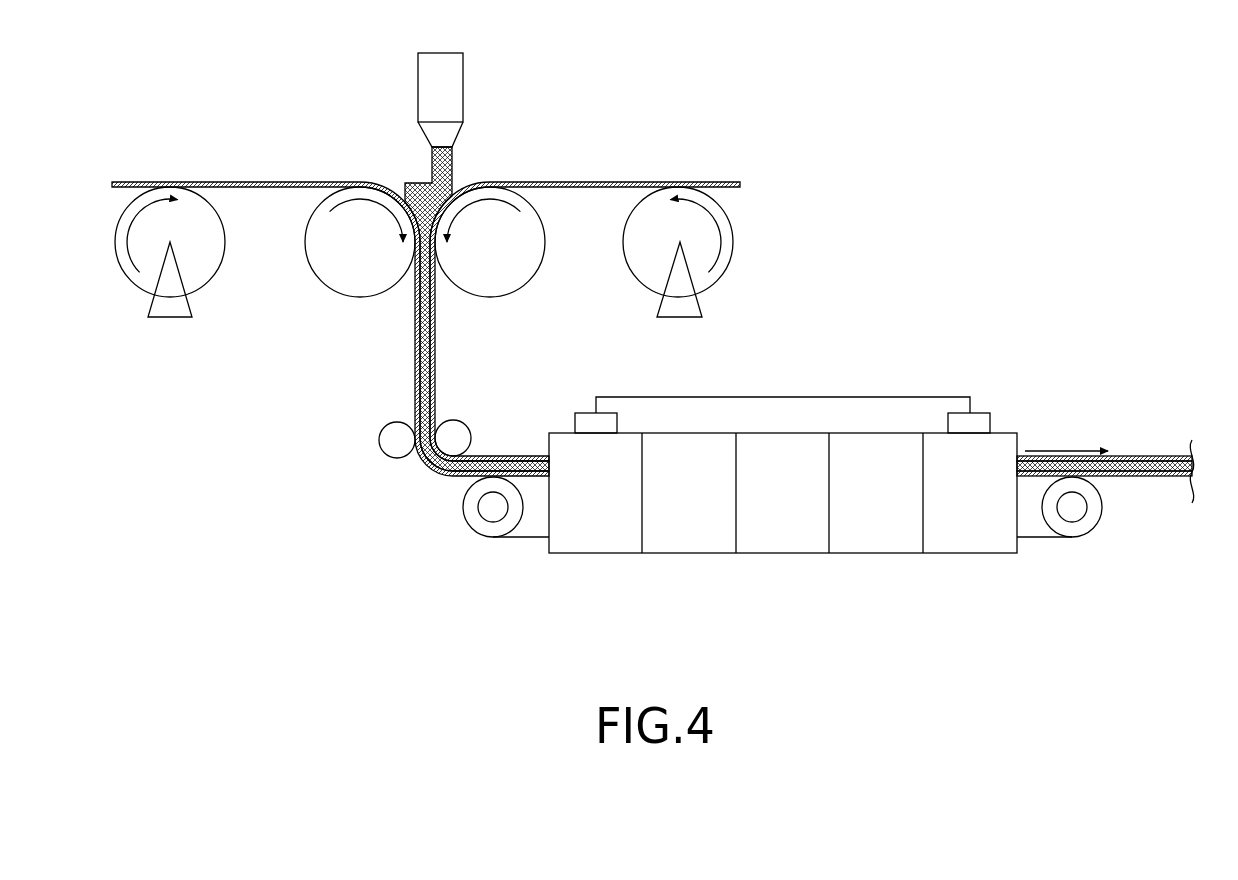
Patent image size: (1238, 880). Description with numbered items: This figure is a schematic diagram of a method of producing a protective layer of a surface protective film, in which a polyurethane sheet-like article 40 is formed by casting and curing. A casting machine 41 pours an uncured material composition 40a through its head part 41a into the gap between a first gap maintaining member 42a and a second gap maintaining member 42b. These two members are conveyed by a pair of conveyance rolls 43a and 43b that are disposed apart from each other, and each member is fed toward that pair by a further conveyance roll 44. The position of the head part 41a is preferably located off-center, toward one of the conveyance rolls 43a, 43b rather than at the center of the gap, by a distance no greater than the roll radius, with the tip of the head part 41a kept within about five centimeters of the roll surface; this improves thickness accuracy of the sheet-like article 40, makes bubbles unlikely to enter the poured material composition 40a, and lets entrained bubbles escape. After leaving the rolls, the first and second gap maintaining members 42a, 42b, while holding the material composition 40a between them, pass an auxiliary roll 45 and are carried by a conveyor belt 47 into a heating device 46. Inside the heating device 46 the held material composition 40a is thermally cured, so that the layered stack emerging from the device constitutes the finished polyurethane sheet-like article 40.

The polyurethane sheet-like article 40 is at (1152, 470).
The material composition 40a is at (420, 175).
The casting machine 41 is at (453, 88).
The head part 41a is at (455, 135).
The first gap maintaining member 42a is at (276, 182).
The second gap maintaining member 42b is at (585, 182).
The conveyance roll 43a is at (347, 288).
The conveyance roll 43b is at (510, 273).
The conveyance roll 44 is at (203, 270).
The auxiliary roll 45 is at (390, 440).
The heating device 46 is at (873, 547).
The conveyor belt 47 is at (485, 532).